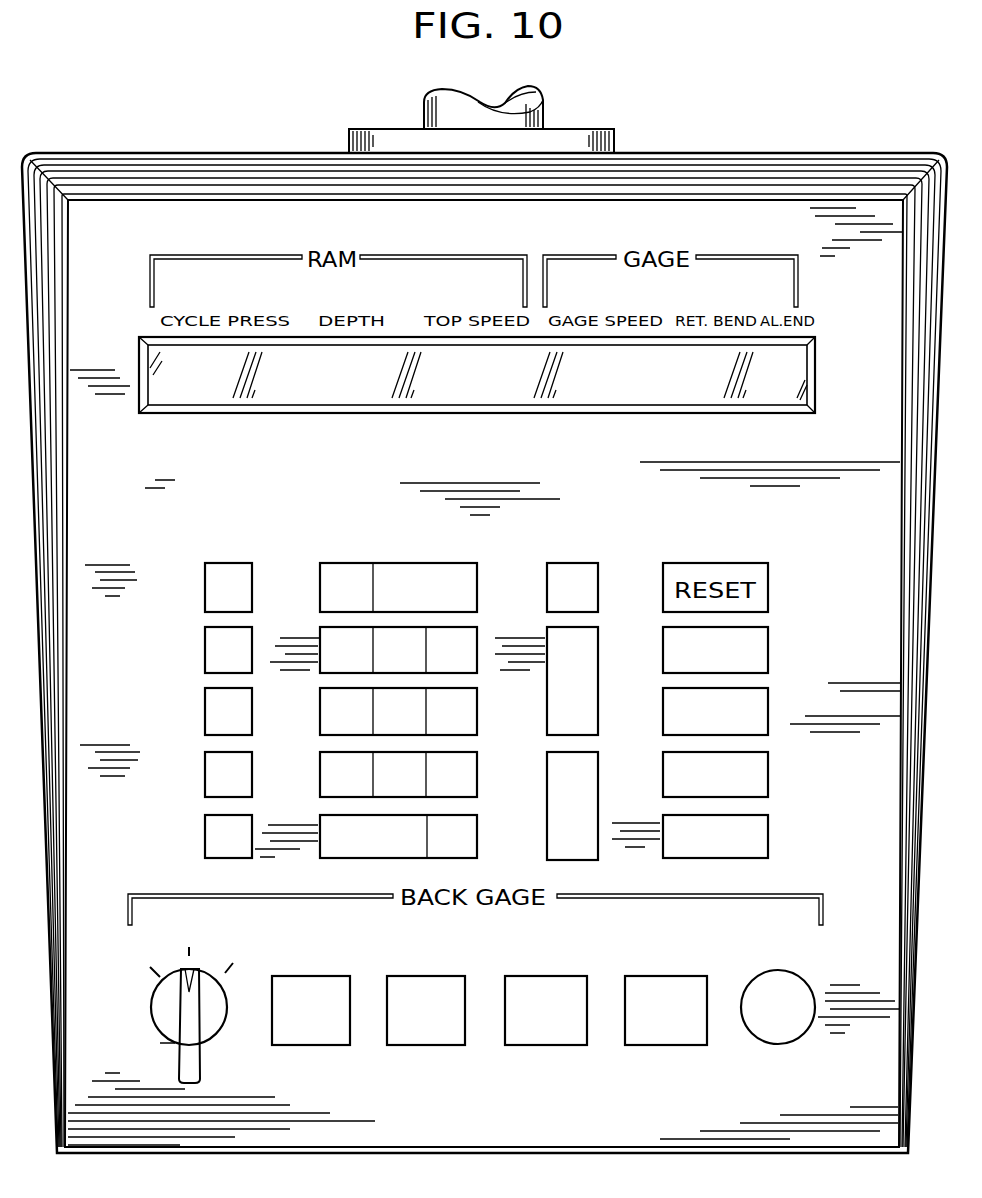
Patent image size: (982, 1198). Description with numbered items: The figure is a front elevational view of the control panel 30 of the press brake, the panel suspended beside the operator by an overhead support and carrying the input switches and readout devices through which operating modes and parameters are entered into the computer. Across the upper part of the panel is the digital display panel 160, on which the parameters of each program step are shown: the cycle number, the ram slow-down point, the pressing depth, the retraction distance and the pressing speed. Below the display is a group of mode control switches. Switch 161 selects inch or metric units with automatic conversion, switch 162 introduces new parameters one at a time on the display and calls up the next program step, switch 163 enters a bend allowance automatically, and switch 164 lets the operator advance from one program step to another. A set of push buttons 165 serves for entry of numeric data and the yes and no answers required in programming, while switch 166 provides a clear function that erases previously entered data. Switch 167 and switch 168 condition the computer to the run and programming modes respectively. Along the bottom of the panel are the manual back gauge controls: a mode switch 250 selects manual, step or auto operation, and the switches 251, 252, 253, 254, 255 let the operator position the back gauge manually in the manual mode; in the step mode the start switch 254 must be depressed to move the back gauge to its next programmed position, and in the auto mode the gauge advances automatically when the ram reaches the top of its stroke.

The control panel 30 is at (748, 207).
The digital display panel 160 is at (280, 413).
The switch 161 is at (205, 590).
The switch 162 is at (205, 707).
The switch 163 is at (205, 775).
The switch 164 is at (205, 837).
The set of push buttons 165 is at (480, 546).
The switch 166 is at (596, 587).
The switch 167 is at (590, 679).
The switch 168 is at (592, 805).
The mode switch 250 is at (168, 1018).
The switch 251 is at (308, 1030).
The switch 252 is at (423, 1030).
The switch 253 is at (547, 1033).
The start switch 254 is at (669, 1032).
The switch 255 is at (785, 1030).